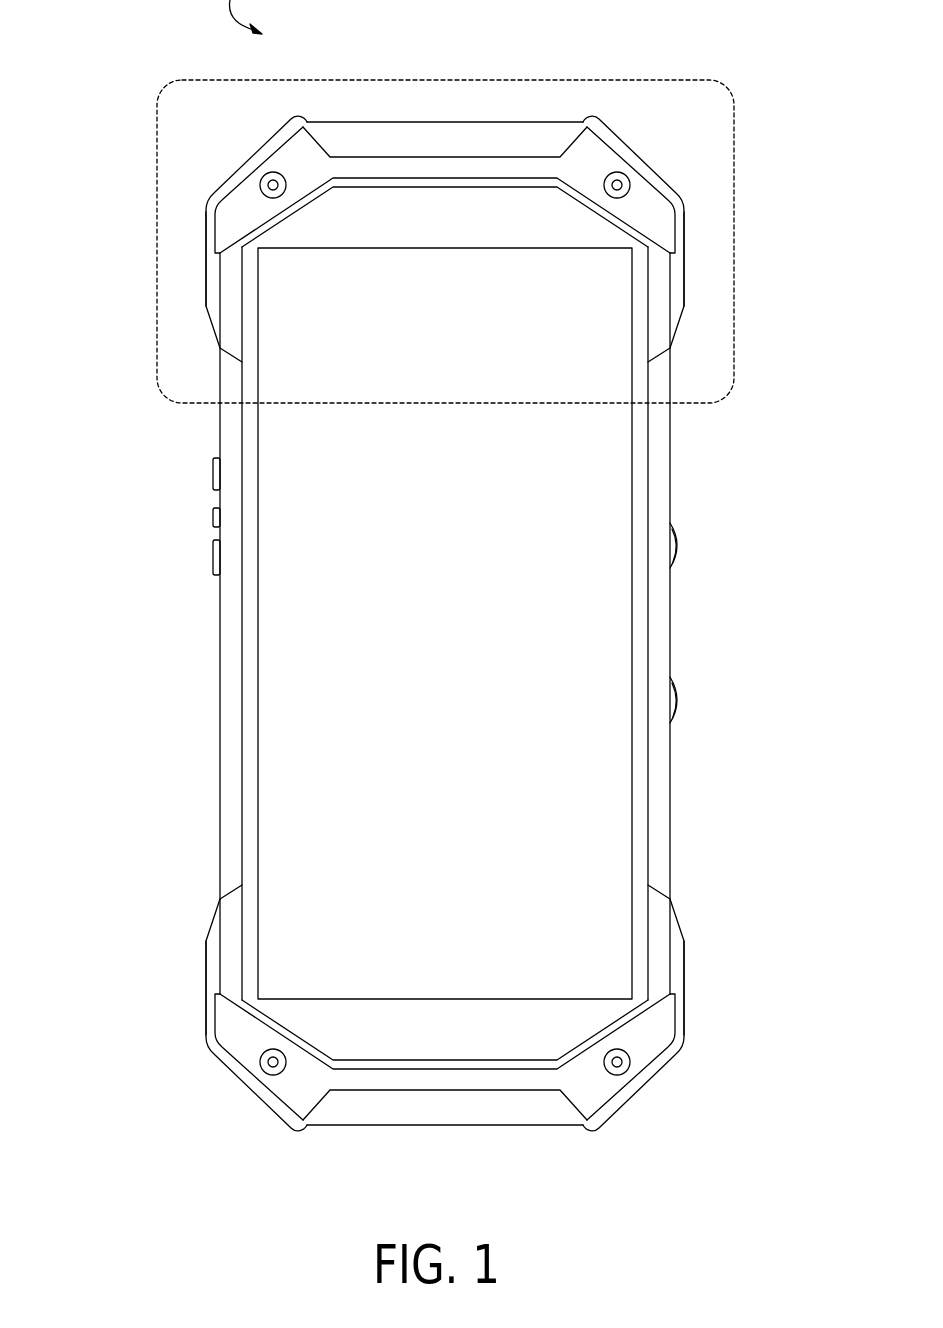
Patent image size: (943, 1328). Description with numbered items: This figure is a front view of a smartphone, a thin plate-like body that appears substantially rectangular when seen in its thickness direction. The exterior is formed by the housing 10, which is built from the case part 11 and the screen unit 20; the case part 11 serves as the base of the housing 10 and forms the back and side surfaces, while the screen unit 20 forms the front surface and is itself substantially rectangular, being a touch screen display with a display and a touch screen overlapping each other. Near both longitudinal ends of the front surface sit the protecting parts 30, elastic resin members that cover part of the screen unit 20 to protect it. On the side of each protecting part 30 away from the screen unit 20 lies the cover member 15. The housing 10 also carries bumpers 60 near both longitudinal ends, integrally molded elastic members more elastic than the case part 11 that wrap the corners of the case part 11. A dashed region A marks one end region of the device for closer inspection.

The housing 10 is at (87, 718).
The case part 11 is at (218, 822).
The cover member 15 is at (428, 135).
The screen unit 20 is at (275, 738).
The protecting part 30 is at (593, 150).
The bumper 60 is at (683, 235).
The region A (corner area shown enlarged) A is at (157, 240).